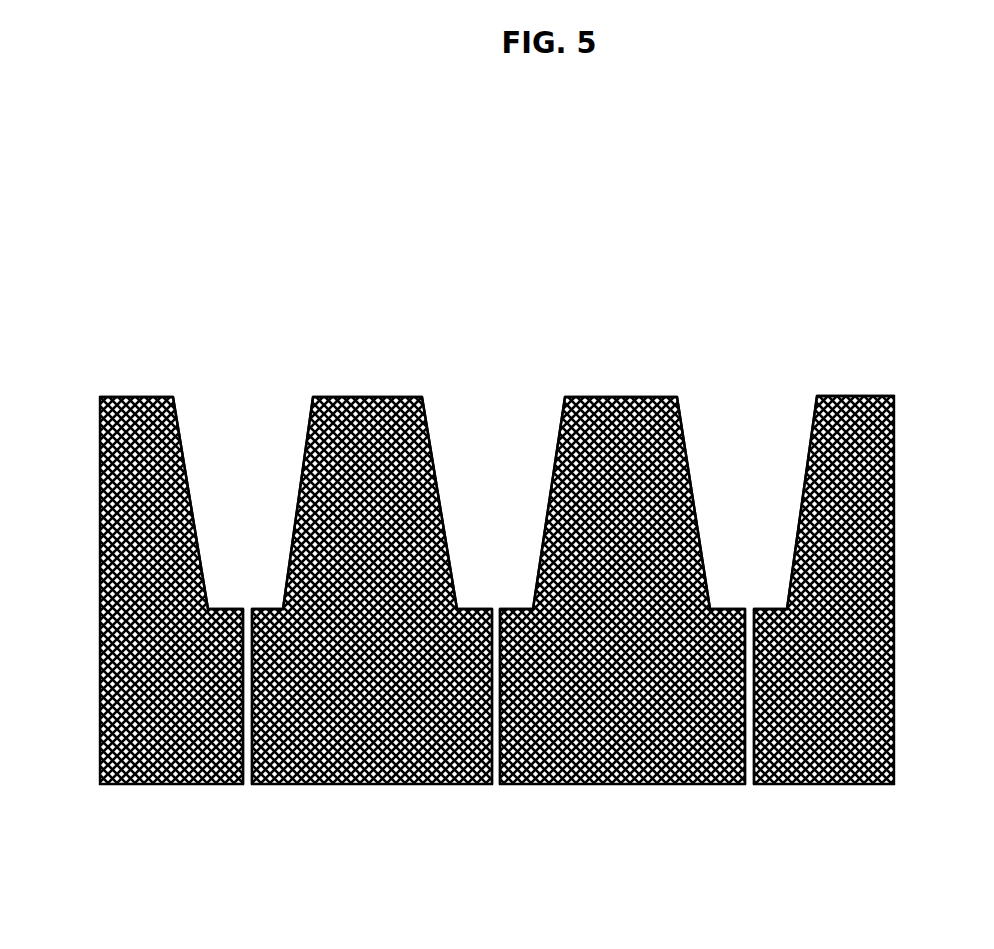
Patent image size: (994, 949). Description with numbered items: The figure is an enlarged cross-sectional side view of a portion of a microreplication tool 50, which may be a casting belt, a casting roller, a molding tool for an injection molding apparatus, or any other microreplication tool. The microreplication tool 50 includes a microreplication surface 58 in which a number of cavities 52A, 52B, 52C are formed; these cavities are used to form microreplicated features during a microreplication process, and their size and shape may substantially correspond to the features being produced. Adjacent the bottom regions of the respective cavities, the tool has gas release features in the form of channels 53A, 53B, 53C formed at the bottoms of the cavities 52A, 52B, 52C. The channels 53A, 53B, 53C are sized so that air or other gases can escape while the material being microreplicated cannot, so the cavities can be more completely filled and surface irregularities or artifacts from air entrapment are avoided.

The microreplication tool 50 is at (84, 554).
The cavity 52A is at (245, 556).
The cavity 52B is at (499, 554).
The cavity 52C is at (750, 553).
The channel 53A is at (243, 657).
The channel 53B is at (497, 682).
The channel 53C is at (748, 682).
The microreplication surface 58 is at (423, 343).